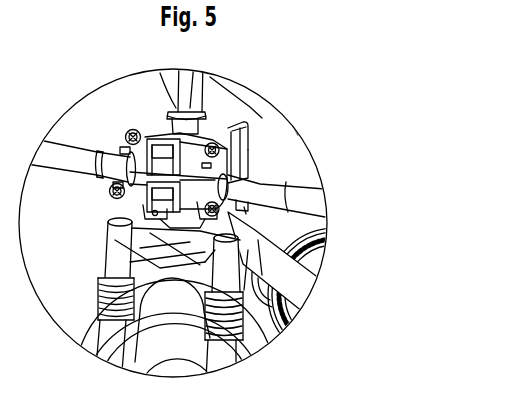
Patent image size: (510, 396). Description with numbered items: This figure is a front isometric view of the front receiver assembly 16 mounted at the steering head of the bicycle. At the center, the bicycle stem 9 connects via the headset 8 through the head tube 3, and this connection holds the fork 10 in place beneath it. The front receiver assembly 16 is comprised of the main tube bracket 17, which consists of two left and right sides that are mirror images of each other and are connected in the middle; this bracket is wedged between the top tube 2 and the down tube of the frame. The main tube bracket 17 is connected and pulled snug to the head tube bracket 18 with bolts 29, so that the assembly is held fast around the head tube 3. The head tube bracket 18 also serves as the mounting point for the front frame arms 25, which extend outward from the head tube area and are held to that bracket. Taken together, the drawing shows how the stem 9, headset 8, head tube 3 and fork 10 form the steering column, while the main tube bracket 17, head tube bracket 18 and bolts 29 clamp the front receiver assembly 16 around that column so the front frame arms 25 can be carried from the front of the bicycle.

The top tube 2 is at (258, 99).
The head tube 3 is at (165, 122).
The headset 8 is at (172, 110).
The bicycle stem 9 is at (190, 90).
The fork 10 is at (112, 257).
The front receiver assembly 16 is at (237, 162).
The main tube bracket 17 is at (252, 131).
The head tube bracket 18 is at (118, 192).
The front frame arms 25 is at (265, 192).
The bolts 29 is at (125, 131).